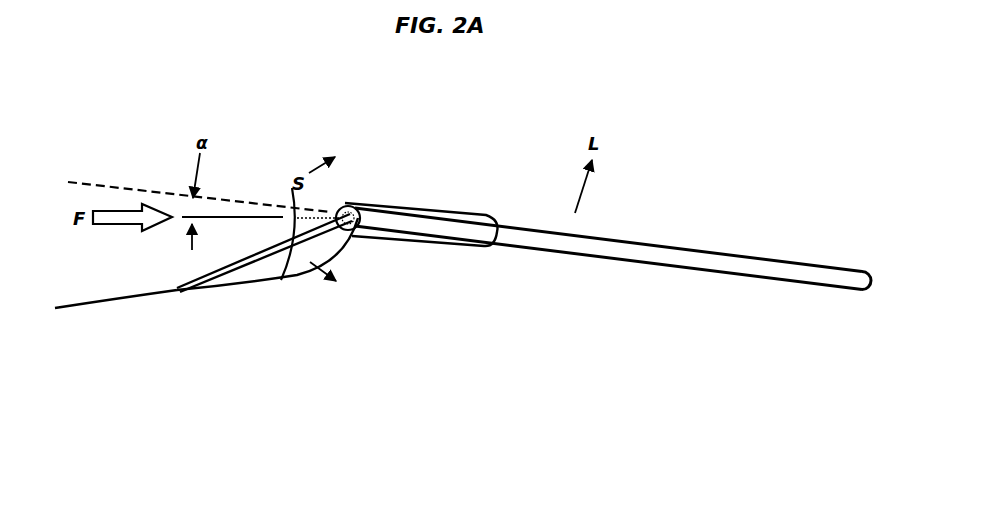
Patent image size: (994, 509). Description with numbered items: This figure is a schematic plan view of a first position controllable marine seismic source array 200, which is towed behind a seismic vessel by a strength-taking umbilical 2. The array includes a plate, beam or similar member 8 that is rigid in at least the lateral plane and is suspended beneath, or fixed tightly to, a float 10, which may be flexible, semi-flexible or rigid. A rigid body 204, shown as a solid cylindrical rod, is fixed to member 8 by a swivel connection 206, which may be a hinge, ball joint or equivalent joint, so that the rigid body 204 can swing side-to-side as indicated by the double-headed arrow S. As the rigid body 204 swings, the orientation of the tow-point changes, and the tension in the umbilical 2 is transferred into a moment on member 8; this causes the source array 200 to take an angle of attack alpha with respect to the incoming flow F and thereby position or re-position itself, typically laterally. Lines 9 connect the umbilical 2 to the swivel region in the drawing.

The strength-taking umbilical 2 is at (112, 300).
The wire pair / pull wires 9 is at (177, 293).
The rigid body 204 is at (281, 277).
The swivel connection 206 is at (362, 206).
The float 10 is at (464, 213).
The plate, beam or similar member 8 is at (708, 268).
The position controllable marine seismic source array 200 is at (806, 188).